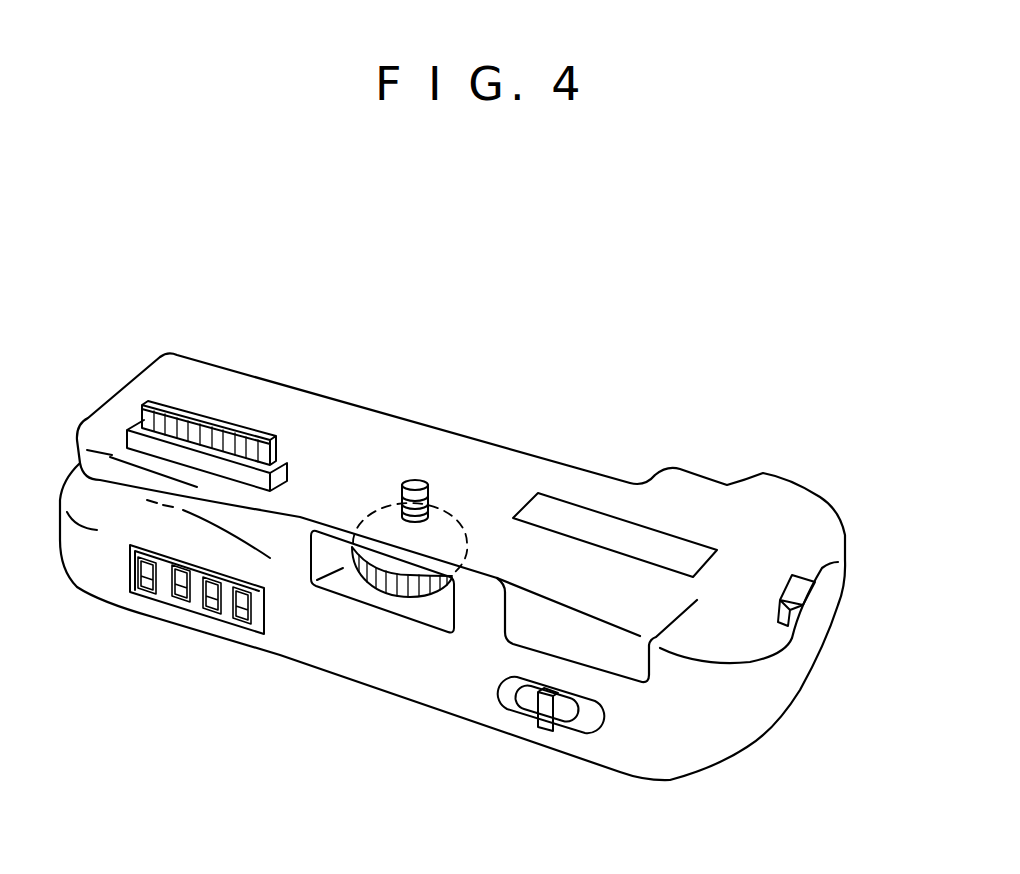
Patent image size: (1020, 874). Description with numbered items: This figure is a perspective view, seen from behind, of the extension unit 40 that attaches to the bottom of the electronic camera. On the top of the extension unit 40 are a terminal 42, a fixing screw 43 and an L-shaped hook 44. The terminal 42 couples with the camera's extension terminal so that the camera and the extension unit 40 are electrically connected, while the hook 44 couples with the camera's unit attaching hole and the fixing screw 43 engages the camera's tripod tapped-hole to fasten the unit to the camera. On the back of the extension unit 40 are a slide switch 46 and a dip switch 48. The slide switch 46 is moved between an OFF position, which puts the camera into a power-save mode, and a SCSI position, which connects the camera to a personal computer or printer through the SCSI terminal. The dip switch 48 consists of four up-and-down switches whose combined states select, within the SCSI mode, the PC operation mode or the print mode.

The extension unit 40 is at (559, 420).
The terminal 42 is at (140, 420).
The fixing screw 43 is at (383, 585).
The L-shaped hook 44 is at (838, 562).
The slide switch 46 is at (528, 710).
The dip switch 48 is at (165, 592).